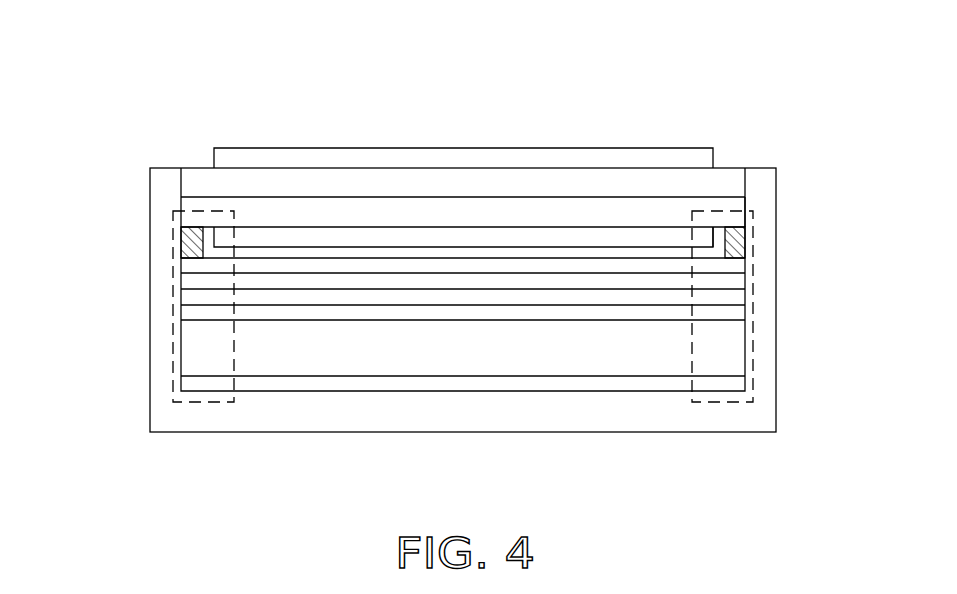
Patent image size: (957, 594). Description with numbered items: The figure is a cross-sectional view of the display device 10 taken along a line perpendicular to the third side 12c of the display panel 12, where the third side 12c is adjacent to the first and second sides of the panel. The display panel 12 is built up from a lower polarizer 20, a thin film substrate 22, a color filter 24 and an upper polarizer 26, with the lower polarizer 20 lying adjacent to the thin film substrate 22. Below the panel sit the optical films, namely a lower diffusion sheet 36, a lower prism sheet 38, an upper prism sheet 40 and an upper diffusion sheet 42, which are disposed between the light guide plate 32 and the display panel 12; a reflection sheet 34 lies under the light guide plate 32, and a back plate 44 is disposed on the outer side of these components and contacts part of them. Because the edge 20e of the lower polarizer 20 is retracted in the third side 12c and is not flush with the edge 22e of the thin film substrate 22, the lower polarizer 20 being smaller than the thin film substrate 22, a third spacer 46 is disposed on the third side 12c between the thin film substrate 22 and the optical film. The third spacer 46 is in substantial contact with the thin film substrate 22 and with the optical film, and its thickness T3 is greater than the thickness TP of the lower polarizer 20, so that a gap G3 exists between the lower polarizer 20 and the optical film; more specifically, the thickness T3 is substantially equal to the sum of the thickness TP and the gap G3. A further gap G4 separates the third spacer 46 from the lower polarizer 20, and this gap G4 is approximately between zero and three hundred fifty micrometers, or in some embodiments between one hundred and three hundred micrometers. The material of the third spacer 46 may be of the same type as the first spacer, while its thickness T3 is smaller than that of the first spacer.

The display device 10 is at (85, 66).
The display panel 12 is at (515, 148).
The third side 12c is at (173, 211).
The lower polarizer 20 is at (343, 233).
The edge of the lower polarizer 20e is at (708, 237).
The thin film substrate 22 is at (390, 208).
The edge of the thin film substrate 22e is at (748, 200).
The color filter 24 is at (441, 180).
The upper polarizer 26 is at (318, 92).
The light guide plate 32 is at (733, 349).
The reflection sheet 34 is at (733, 384).
The lower diffusion sheet 36 is at (472, 313).
The lower prism sheet 38 is at (520, 298).
The upper prism sheet 40 is at (568, 282).
The upper diffusion sheet 42 is at (617, 267).
The back plate 44 is at (763, 415).
The third spacer 46 is at (183, 240).
The gap G3 is at (250, 297).
The gap G4 is at (725, 262).
The thickness of the third spacer T3 is at (745, 227).
The thickness of the lower polarizer TP is at (540, 183).